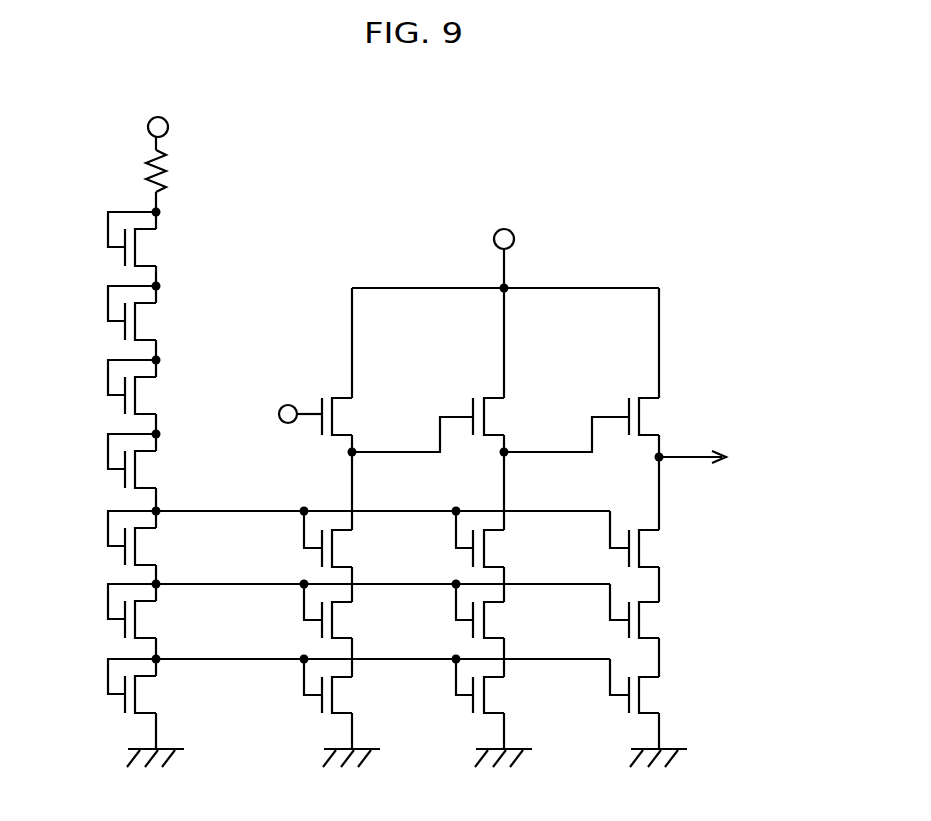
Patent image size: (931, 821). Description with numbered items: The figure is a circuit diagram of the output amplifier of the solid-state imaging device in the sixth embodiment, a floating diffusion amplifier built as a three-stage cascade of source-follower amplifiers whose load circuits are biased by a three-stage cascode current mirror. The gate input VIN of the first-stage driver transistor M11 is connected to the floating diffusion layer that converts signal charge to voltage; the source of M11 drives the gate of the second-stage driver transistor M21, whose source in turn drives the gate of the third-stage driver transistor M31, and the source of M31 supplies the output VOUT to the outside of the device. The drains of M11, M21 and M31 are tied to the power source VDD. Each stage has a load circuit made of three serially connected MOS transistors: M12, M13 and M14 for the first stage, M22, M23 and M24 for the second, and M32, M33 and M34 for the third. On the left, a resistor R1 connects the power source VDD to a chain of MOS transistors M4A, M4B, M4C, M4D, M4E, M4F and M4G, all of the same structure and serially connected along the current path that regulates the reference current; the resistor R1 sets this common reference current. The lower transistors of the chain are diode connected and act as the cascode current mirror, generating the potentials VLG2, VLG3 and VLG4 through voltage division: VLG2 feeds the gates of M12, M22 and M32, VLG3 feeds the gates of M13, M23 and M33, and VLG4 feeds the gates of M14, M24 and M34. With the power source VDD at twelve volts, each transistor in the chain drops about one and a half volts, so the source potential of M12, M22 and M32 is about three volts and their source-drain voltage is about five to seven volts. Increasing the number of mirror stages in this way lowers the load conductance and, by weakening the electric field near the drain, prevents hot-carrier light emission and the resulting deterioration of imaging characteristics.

The power source VDD is at (360, 181).
The resistor R1 is at (135, 171).
The MOS transistor M4A is at (97, 239).
The MOS transistor M4B is at (97, 313).
The MOS transistor M4C is at (97, 387).
The MOS transistor M4D is at (97, 461).
The MOS transistor M4E is at (97, 538).
The MOS transistor M4F is at (97, 611).
The MOS transistor M4G is at (97, 686).
The gate input VIN is at (294, 399).
The first-stage driver transistor M11 is at (364, 416).
The second-stage driver transistor M21 is at (455, 425).
The third-stage driver transistor M31 is at (610, 425).
The output VOUT is at (725, 457).
The potential VLG2 is at (383, 497).
The potential VLG3 is at (383, 570).
The potential VLG4 is at (383, 645).
The MOS transistor M12 is at (355, 539).
The MOS transistor M13 is at (355, 611).
The MOS transistor M14 is at (355, 686).
The MOS transistor M22 is at (507, 539).
The MOS transistor M23 is at (507, 611).
The MOS transistor M24 is at (507, 686).
The MOS transistor M32 is at (663, 539).
The MOS transistor M33 is at (663, 611).
The MOS transistor M34 is at (663, 686).